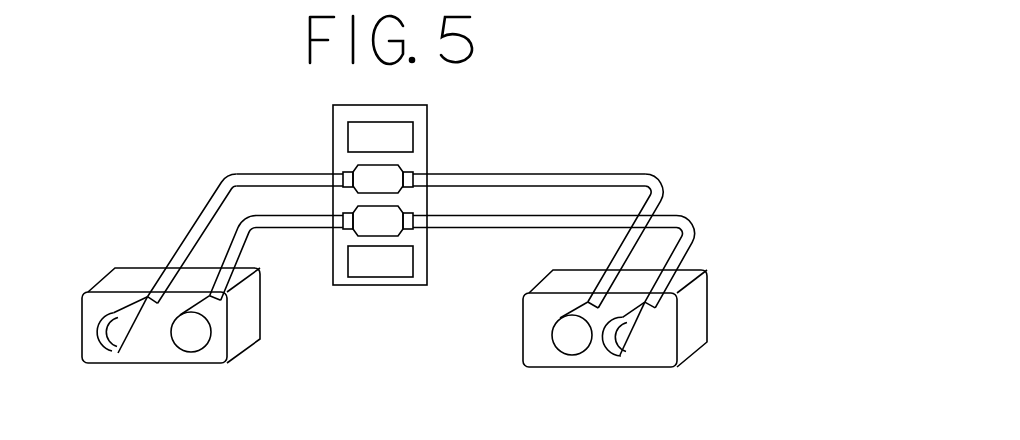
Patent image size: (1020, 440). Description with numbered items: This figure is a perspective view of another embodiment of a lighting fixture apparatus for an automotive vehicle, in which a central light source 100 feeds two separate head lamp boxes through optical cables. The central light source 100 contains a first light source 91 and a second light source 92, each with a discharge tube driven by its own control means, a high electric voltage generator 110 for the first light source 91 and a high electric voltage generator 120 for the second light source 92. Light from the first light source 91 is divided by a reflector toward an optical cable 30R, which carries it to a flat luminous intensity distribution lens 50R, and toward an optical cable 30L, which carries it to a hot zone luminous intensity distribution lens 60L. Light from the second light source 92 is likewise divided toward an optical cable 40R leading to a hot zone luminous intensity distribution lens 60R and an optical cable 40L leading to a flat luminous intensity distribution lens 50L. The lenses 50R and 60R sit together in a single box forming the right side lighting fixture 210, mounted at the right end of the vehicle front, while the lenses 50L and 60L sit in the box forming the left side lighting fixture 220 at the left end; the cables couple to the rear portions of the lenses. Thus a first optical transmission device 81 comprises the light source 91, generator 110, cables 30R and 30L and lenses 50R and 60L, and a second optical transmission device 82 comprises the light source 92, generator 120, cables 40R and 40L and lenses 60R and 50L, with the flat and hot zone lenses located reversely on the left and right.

The central light source 100 is at (348, 287).
The high electric voltage generator 110 is at (348, 123).
The high electric voltage generator 120 is at (380, 320).
The first light source 91 is at (386, 172).
The second light source 92 is at (392, 226).
The optical cable 30R is at (247, 174).
The optical cable 30L is at (478, 174).
The optical cable 40R is at (280, 229).
The optical cable 40L is at (510, 229).
The first optical transmission device 81 is at (208, 195).
The second optical transmission device 82 is at (677, 211).
The right side lighting fixture 210 is at (117, 260).
The left side lighting fixture 220 is at (568, 260).
The flat luminous intensity distribution lens 50R is at (118, 347).
The hot zone luminous intensity distribution lens 60R is at (190, 345).
The flat luminous intensity distribution lens 50L is at (627, 347).
The hot zone luminous intensity distribution lens 60L is at (565, 348).